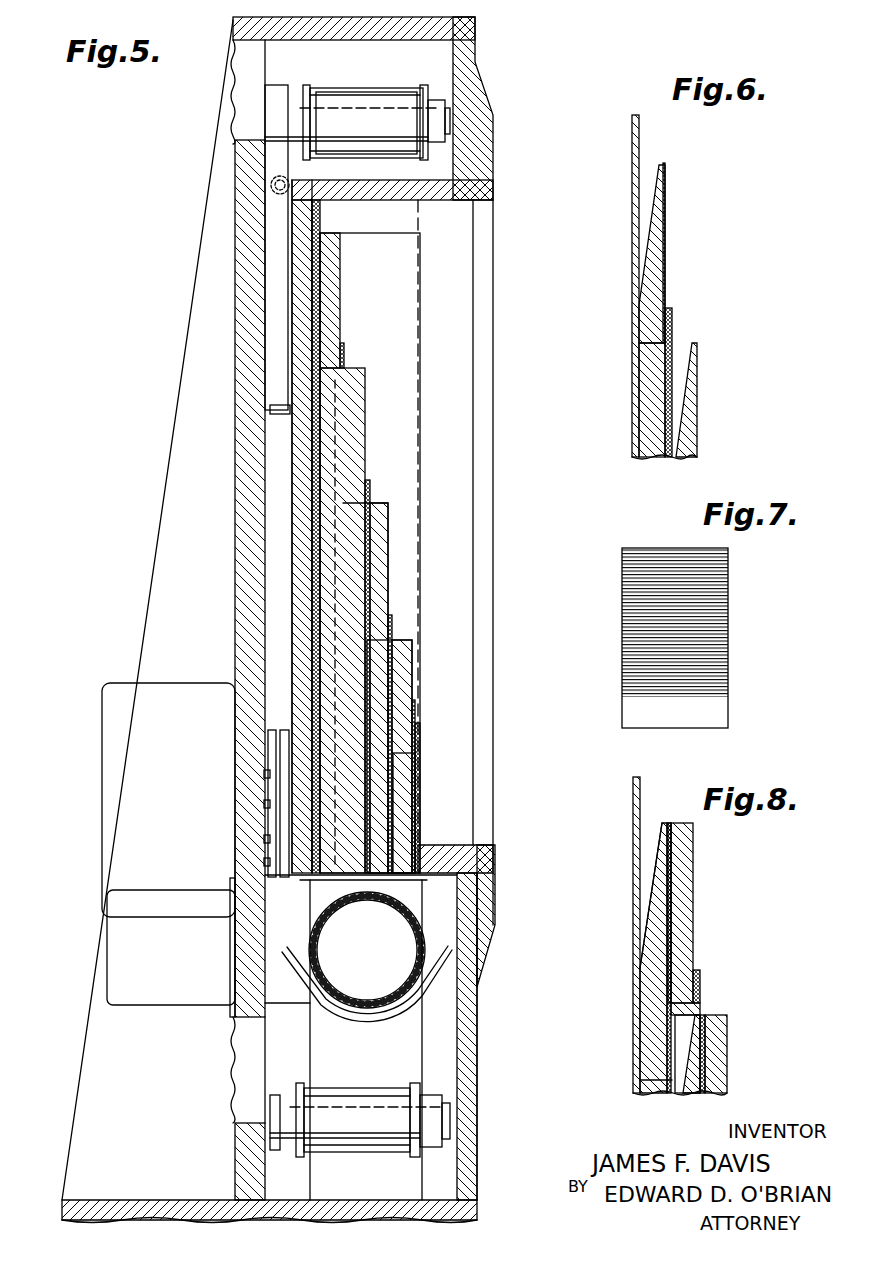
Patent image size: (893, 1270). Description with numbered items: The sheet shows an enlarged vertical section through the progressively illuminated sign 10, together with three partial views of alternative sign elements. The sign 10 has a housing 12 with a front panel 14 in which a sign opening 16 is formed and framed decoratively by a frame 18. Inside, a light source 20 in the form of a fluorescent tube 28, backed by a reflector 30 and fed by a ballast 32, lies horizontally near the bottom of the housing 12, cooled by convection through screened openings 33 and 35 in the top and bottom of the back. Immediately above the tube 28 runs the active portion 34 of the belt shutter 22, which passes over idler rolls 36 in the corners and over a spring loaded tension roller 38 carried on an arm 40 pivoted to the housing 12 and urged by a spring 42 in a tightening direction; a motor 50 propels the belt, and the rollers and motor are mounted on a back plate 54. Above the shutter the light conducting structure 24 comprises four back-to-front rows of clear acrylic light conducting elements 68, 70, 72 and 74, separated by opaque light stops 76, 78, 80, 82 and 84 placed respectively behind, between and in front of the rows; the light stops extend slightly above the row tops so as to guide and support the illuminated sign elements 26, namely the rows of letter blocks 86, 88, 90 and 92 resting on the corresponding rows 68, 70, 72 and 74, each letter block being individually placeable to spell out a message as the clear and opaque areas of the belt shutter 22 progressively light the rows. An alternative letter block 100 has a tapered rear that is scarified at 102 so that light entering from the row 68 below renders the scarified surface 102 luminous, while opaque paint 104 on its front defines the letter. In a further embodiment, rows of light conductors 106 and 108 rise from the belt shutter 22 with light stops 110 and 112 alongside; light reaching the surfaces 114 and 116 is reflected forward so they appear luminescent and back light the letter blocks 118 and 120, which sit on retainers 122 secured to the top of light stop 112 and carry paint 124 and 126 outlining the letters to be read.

In FIG. 5, the progressively illuminated sign 10 is at (515, 110).
In FIG. 5, the housing 12 is at (238, 212).
In FIG. 5, the front panel 14 is at (468, 40).
In FIG. 5, the sign opening 16 is at (458, 262).
In FIG. 5, the frame 18 is at (480, 900).
In FIG. 5, the light source 20 is at (368, 1005).
In FIG. 5, the belt shutter 22 is at (380, 88).
In FIG. 5, the light conducting structure 24 is at (380, 683).
In FIG. 5, the illuminated sign elements 26 is at (337, 302).
In FIG. 5, the fluorescent tube 28 is at (315, 906).
In FIG. 5, the reflector 30 is at (335, 990).
In FIG. 5, the ballast 32 is at (156, 1000).
In FIG. 5, the screened opening 33 is at (233, 100).
In FIG. 5, the active portion of belt shutter 34 is at (449, 1036).
In FIG. 5, the screened opening 35 is at (233, 1066).
In FIG. 5, the idler rolls 36 is at (360, 1120).
In FIG. 5, the tension roller 38 is at (346, 110).
In FIG. 5, the arm 40 is at (275, 333).
In FIG. 5, the spring 42 is at (271, 185).
In FIG. 5, the motor 50 is at (125, 782).
In FIG. 5, the back plate 54 is at (245, 570).
In FIG. 5, the row of light conducting elements 68 is at (330, 385).
In FIG. 6, the row of light conducting elements 68 is at (648, 397).
In FIG. 5, the row of light conducting elements 70 is at (363, 510).
In FIG. 5, the row of light conducting elements 72 is at (390, 643).
In FIG. 5, the row of light conducting elements 74 is at (405, 800).
In FIG. 5, the light stop 76 is at (320, 222).
In FIG. 6, the light stop 76 is at (640, 140).
In FIG. 5, the light stop 78 is at (342, 348).
In FIG. 6, the light stop 78 is at (674, 335).
In FIG. 5, the light stop 80 is at (368, 485).
In FIG. 5, the light stop 82 is at (405, 712).
In FIG. 5, the light stop 84 is at (442, 798).
In FIG. 5, the row of letter blocks 86 is at (330, 264).
In FIG. 5, the row of letter blocks 88 is at (345, 410).
In FIG. 5, the row of letter blocks 90 is at (388, 532).
In FIG. 5, the row of letter blocks 92 is at (402, 680).
In FIG. 6, the letter block 100 is at (696, 241).
In FIG. 7, the letter block 100 is at (674, 638).
In FIG. 6, the scarified surface 102 is at (653, 177).
In FIG. 7, the scarified surface 102 is at (638, 615).
In FIG. 6, the opaque paint 104 is at (666, 214).
In FIG. 8, the row of light conductors 106 is at (652, 1048).
In FIG. 8, the row of light conductors 108 is at (692, 1068).
In FIG. 8, the light stop 110 is at (633, 928).
In FIG. 8, the light stop 112 is at (667, 1025).
In FIG. 8, the surface 114 is at (655, 850).
In FIG. 8, the surface 116 is at (655, 1078).
In FIG. 8, the letter block 118 is at (685, 905).
In FIG. 8, the letter block 120 is at (712, 1033).
In FIG. 8, the retainers 122 is at (700, 1005).
In FIG. 8, the paint 124 is at (672, 862).
In FIG. 8, the paint 126 is at (710, 1080).